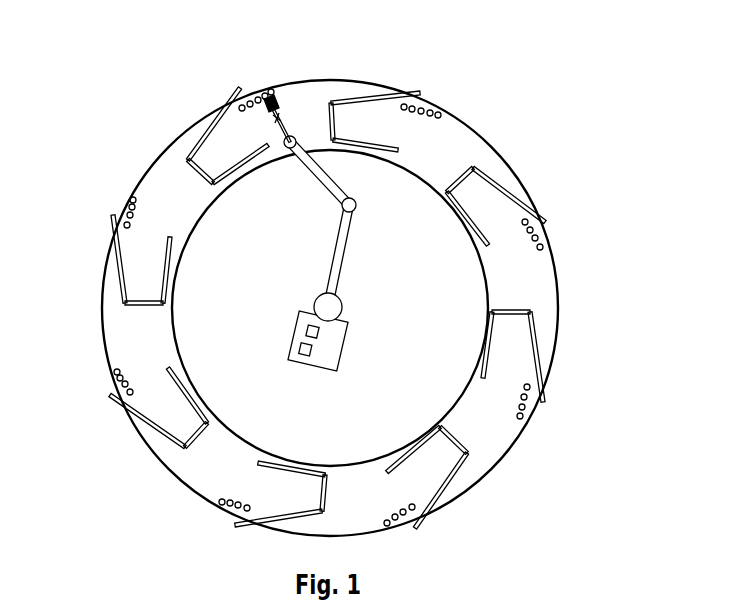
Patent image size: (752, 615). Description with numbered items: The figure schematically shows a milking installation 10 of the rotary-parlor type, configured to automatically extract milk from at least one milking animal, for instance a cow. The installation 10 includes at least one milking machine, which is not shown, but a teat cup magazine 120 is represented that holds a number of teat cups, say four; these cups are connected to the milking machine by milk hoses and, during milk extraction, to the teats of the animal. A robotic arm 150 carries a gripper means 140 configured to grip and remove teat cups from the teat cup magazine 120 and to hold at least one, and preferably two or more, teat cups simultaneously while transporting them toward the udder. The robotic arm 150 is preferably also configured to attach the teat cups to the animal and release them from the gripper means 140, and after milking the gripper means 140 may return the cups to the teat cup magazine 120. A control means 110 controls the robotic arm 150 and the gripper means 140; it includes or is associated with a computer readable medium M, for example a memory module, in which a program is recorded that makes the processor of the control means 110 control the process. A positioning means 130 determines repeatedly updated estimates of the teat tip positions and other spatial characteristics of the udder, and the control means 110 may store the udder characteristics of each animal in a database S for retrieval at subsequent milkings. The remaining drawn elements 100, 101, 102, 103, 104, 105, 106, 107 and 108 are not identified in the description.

The milking installation 10 is at (100, 60).
The rotary table / platform 100 is at (477, 130).
The processing station 101 is at (190, 106).
The processing station 102 is at (121, 274).
The processing station 103 is at (152, 430).
The processing station 104 is at (272, 518).
The processing station 105 is at (447, 487).
The processing station 106 is at (537, 340).
The processing station 107 is at (500, 185).
The processing station 108 is at (357, 100).
The control means 110 is at (322, 367).
The teat cup magazine 120 is at (253, 90).
The positioning means 130 is at (313, 76).
The gripper means 140 is at (272, 100).
The robotic arm 150 is at (308, 173).
The database S is at (303, 328).
The computer readable medium M is at (308, 357).